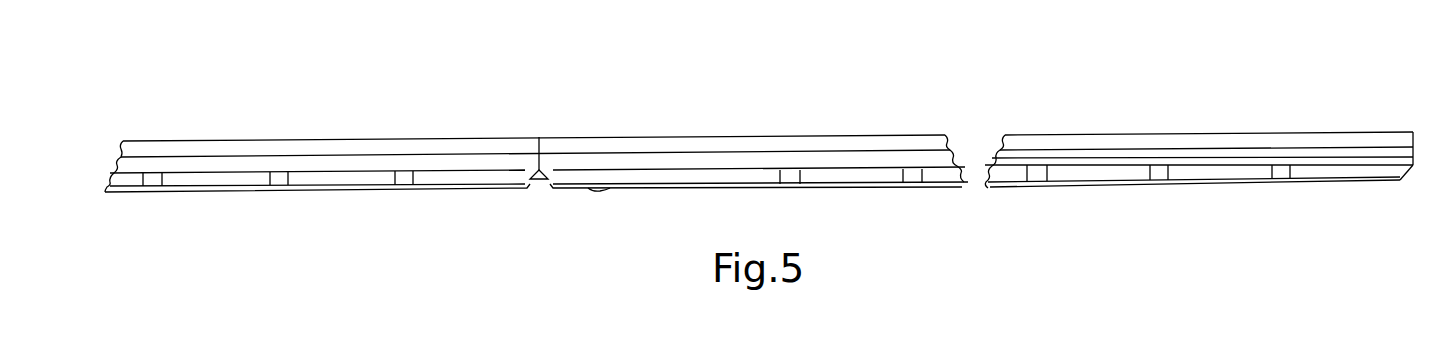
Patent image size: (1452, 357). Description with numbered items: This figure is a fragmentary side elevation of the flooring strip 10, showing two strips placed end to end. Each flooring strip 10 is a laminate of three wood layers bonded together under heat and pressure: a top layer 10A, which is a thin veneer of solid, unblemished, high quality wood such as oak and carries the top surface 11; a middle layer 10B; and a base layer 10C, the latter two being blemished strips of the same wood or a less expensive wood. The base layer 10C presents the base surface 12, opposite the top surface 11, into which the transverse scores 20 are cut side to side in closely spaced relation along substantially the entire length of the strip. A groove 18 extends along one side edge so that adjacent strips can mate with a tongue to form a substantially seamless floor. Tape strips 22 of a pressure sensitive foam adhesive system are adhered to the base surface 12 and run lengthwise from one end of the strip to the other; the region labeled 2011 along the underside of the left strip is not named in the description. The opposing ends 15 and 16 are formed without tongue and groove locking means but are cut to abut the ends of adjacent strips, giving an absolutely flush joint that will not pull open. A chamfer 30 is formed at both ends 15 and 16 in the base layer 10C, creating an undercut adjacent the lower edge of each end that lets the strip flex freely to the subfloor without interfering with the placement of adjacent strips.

The flooring strip 10 is at (394, 112).
The top surface 11 is at (718, 136).
The end edge 15 is at (553, 147).
The end edge 16 is at (528, 140).
The base surface 12 is at (592, 189).
The support blocks 2011 is at (407, 186).
The chamfer 30 is at (534, 181).
The transverse scores 20 is at (1033, 185).
The top layer 10A is at (1127, 136).
The groove 18 is at (1212, 151).
The middle layer 10B is at (1283, 152).
The base layer 10C is at (1222, 174).
The tape strip 22 is at (1278, 185).